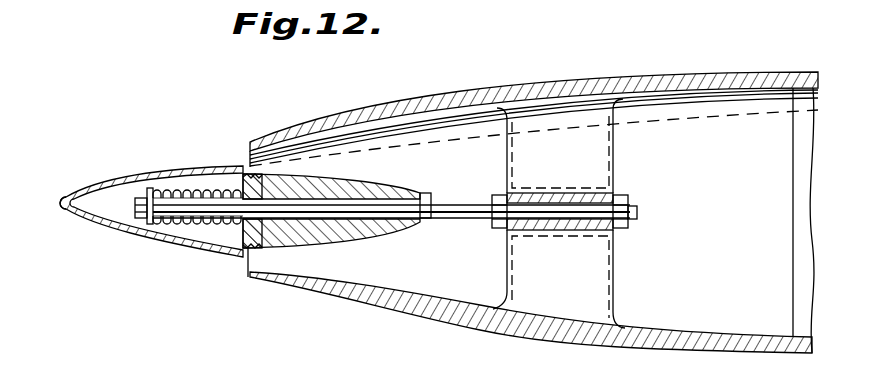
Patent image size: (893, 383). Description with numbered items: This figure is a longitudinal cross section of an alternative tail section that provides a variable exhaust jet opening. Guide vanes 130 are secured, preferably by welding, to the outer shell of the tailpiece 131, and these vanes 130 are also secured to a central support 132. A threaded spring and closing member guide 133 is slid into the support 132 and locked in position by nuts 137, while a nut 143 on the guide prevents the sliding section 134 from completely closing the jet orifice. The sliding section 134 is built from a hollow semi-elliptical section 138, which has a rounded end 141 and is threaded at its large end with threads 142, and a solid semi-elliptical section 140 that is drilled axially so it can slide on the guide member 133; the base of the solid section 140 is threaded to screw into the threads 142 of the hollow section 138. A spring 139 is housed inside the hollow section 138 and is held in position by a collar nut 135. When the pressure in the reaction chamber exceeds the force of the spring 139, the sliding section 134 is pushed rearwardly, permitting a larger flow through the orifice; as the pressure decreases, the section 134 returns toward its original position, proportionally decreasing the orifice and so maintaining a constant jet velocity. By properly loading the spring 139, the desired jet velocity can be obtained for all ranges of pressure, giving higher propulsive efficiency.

The guide vanes 130 is at (577, 113).
The tailpiece 131 is at (538, 331).
The central support 132 is at (587, 187).
The spring and closing member guide 133 is at (457, 221).
The sliding section 134 is at (193, 167).
The collar nut 135 is at (138, 221).
The nuts 137 is at (497, 233).
The hollow semi-elliptical section 138 is at (128, 175).
The spring 139 is at (172, 222).
The solid semi-elliptical section 140 is at (349, 241).
The rounded end 141 is at (66, 199).
The threads 142 is at (250, 250).
The nut 143 is at (424, 194).